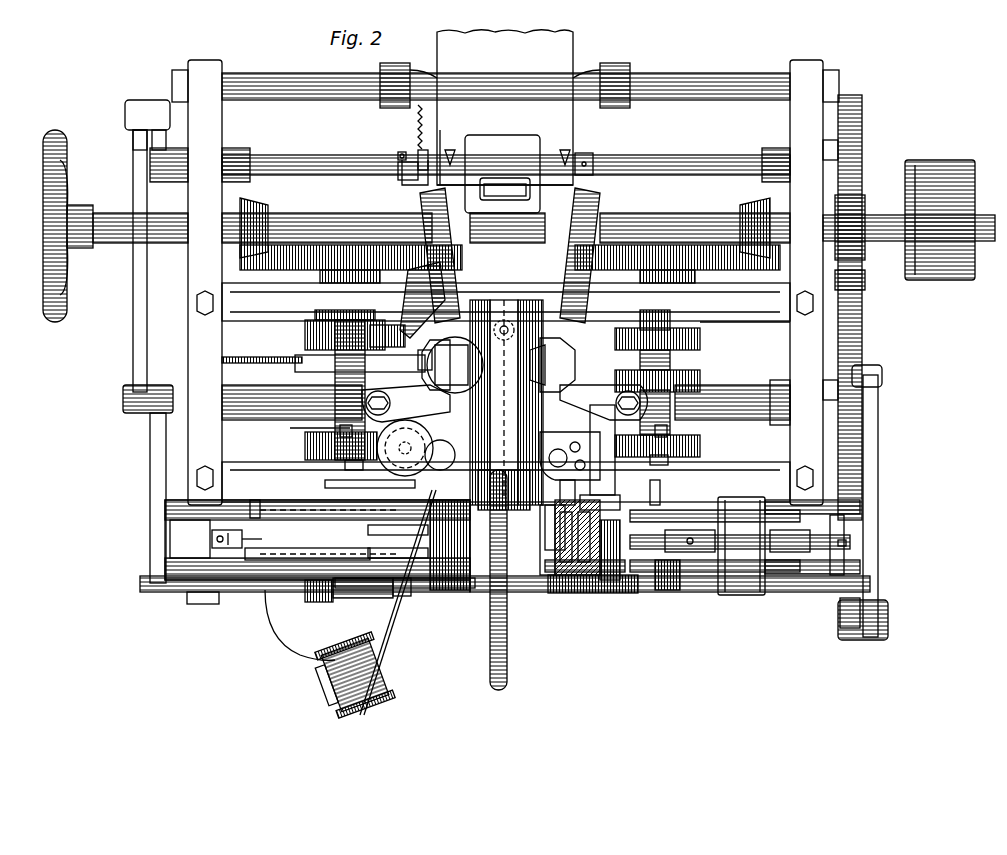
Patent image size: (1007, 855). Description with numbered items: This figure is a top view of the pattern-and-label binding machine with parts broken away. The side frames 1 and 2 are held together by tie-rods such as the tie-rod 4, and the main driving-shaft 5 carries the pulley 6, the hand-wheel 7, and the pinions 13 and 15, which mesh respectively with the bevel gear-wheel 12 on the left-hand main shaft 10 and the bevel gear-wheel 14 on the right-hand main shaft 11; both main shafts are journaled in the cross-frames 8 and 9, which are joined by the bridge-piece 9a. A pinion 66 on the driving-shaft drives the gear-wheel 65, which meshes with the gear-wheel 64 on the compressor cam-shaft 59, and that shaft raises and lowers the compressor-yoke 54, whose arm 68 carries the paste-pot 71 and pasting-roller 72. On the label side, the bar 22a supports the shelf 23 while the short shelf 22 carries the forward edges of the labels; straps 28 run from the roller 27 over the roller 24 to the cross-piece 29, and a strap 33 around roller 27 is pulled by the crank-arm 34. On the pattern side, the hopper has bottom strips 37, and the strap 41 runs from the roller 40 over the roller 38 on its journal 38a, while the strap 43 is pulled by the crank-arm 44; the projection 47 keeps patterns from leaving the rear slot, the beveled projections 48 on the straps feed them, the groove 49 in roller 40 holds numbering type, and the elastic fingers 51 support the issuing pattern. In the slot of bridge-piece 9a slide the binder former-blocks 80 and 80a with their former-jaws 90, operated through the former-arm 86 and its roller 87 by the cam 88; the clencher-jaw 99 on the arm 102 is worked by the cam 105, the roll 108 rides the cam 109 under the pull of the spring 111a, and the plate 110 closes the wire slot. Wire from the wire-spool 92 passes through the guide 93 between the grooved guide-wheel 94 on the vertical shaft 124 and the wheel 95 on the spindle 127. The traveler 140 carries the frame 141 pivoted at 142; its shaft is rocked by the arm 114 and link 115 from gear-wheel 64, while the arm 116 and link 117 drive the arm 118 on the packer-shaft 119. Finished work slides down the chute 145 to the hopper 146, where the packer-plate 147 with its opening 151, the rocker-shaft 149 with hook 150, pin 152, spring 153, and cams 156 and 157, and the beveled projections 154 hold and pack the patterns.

The side frame 1 is at (790, 340).
The side frame 2 is at (250, 340).
The tie-rod 4 is at (685, 90).
The main driving-shaft 5 is at (330, 222).
The pulley 6 is at (945, 165).
The hand-wheel 7 is at (62, 295).
The cross-frame 8 is at (387, 318).
The cross-frame 9 is at (504, 486).
The bridge-piece 9a is at (570, 446).
The left-hand main shaft 10 is at (330, 425).
The right-hand main shaft 11 is at (675, 365).
The bevel gear-wheel 12 is at (455, 258).
The pinion 13 is at (262, 210).
The bevel gear-wheel 14 is at (745, 262).
The pinion 15 is at (740, 215).
The supporting-shelf 22 is at (636, 525).
The bar 22a is at (798, 543).
The shelf 23 is at (738, 618).
The roller 24 is at (800, 512).
The roller 27 is at (485, 595).
The strap 28 is at (690, 628).
The cross-piece 29 is at (845, 532).
The strap 33 is at (625, 595).
The crank-arm 34 is at (668, 592).
The bottom strips 37 is at (317, 540).
The roller 38 is at (180, 586).
The journal 38a is at (205, 603).
The roller 40 is at (402, 598).
The strap 41 is at (283, 512).
The strap 43 is at (378, 600).
The crank-arm 44 is at (318, 605).
The projection 47 is at (240, 536).
The projection 48 is at (220, 570).
The groove 49 is at (445, 598).
The elastic fingers 51 is at (385, 530).
The compressor-yoke 54 is at (505, 400).
The compressor cam-shaft 59 is at (720, 400).
The gear-wheel 64 is at (863, 358).
The gear-wheel 65 is at (862, 285).
The pinion 66 is at (865, 212).
The arm 68 is at (615, 482).
The paste-pot 71 is at (570, 500).
The pasting-roller 72 is at (588, 590).
The binder former-block 80 is at (480, 365).
The binder former-block 80a is at (573, 365).
The former-arm 86 is at (342, 435).
The roller 87 is at (350, 462).
The cam 88 is at (315, 445).
The former-jaw 90 is at (495, 345).
The wire-spool 92 is at (360, 715).
The guide 93 is at (420, 497).
The grooved guide-wheel 94 is at (395, 466).
The wheel 95 is at (440, 455).
The clencher-jaw 99 is at (428, 350).
The arm 102 is at (320, 330).
The cam 105 is at (700, 375).
The roll 108 is at (505, 302).
The cam 109 is at (655, 312).
The projecting plate 110 is at (360, 361).
The spring 111a is at (262, 351).
The arm 114 is at (848, 615).
The link 115 is at (878, 478).
The arm 116 is at (155, 470).
The link 117 is at (118, 261).
The arm 118 is at (160, 112).
The packer-shaft 119 is at (300, 155).
The vertical shaft 124 is at (586, 460).
The spindle 127 is at (586, 443).
The traveler 140 is at (505, 675).
The frame 141 is at (525, 438).
The pivot 142 is at (500, 485).
The chute 145 is at (600, 205).
The hopper 146 is at (505, 107).
The packer-plate 147 is at (502, 174).
The rocker-shaft 149 is at (593, 162).
The hook 150 is at (505, 199).
The opening 151 is at (512, 192).
The pin 152 is at (420, 155).
The spring 153 is at (428, 120).
The beveled projections 154 is at (563, 148).
The cam 156 is at (400, 152).
The cam 157 is at (405, 180).